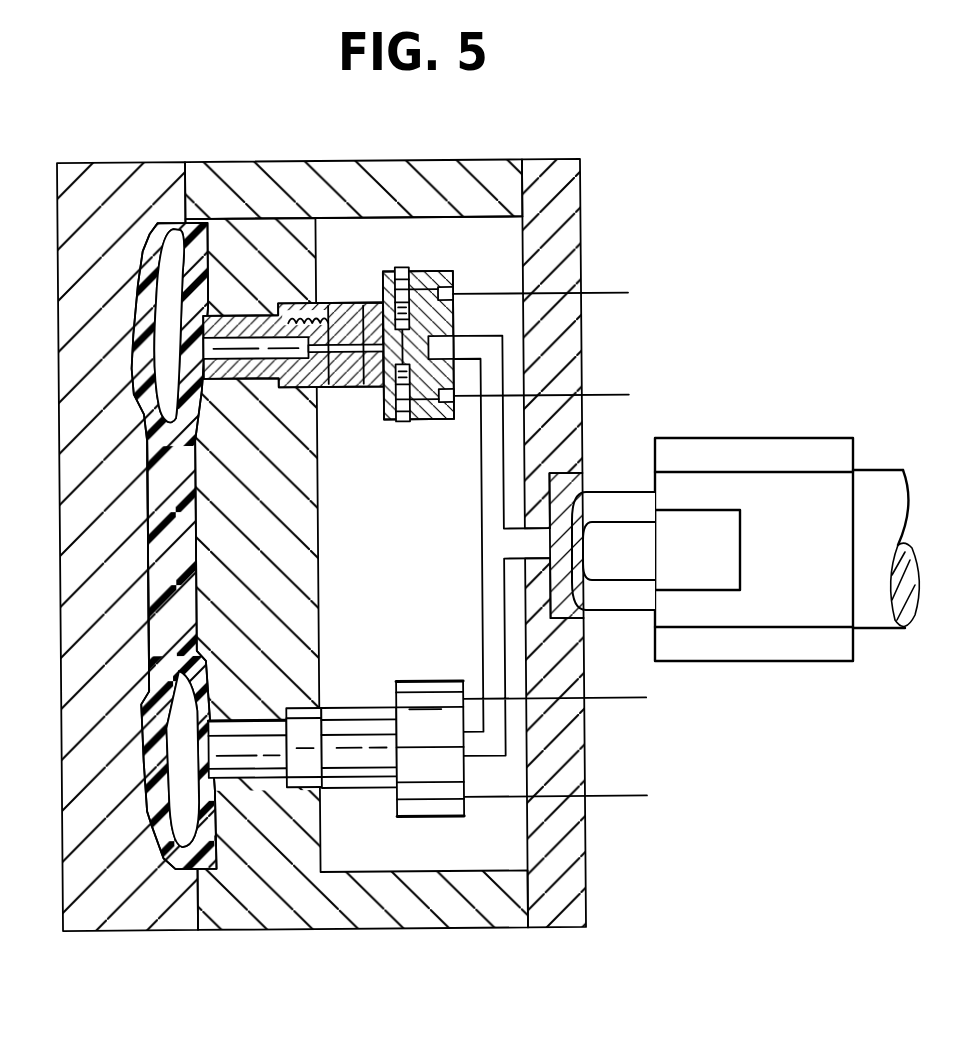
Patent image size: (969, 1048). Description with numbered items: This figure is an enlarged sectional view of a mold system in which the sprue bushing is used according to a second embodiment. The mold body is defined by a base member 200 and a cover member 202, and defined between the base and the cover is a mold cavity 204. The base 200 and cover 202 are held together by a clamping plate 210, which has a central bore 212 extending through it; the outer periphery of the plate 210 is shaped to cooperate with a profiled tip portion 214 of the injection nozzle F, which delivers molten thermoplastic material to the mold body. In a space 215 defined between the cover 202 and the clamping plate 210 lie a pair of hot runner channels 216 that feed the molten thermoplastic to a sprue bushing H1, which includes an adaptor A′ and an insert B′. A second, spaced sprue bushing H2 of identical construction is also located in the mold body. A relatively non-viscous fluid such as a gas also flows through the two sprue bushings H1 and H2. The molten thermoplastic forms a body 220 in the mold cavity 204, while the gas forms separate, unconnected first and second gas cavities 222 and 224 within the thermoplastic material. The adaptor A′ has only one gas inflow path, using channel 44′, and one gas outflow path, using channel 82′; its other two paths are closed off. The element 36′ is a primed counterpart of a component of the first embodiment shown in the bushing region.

The base member 200 is at (165, 929).
The cover member 202 is at (321, 178).
The mold cavity 204 is at (155, 640).
The clamping plate 210 is at (545, 929).
The central bore 212 is at (540, 568).
The profiled tip portion 214 is at (625, 512).
The space 215 is at (448, 872).
The hot runner channels 216 is at (482, 614).
The body 220 is at (175, 565).
The first gas cavity 222 is at (165, 765).
The second gas cavity 224 is at (163, 326).
The channel 82′ is at (425, 272).
The channel 44′ is at (437, 410).
The stem 36′ is at (385, 365).
The adaptor A′ is at (437, 268).
The insert B′ is at (357, 306).
The sprue bushing H1 is at (379, 426).
The second sprue bushing H2 is at (377, 699).
The nozzle F is at (718, 434).